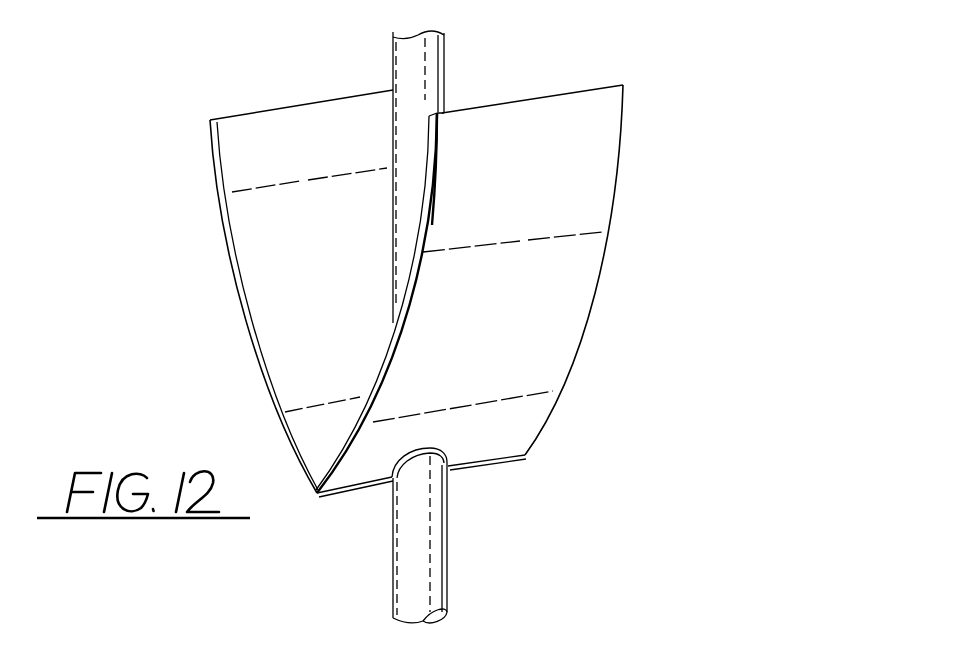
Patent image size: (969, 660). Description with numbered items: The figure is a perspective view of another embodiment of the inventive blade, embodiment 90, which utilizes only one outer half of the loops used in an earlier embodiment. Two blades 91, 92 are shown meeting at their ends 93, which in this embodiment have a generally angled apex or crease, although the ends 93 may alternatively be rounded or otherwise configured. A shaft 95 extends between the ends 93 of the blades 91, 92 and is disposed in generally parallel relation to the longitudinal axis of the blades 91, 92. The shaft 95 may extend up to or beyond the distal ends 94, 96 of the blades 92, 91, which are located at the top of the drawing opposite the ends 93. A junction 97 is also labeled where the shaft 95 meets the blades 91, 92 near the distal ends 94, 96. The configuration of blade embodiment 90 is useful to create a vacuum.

The blade embodiment 90 is at (246, 90).
The blade 91 is at (582, 180).
The blade 92 is at (265, 318).
The ends of blades 93 is at (357, 488).
The distal end of blade 94 is at (340, 95).
The shaft 95 is at (443, 522).
The distal end of blade 96 is at (545, 97).
The hinge junction 97 is at (440, 103).